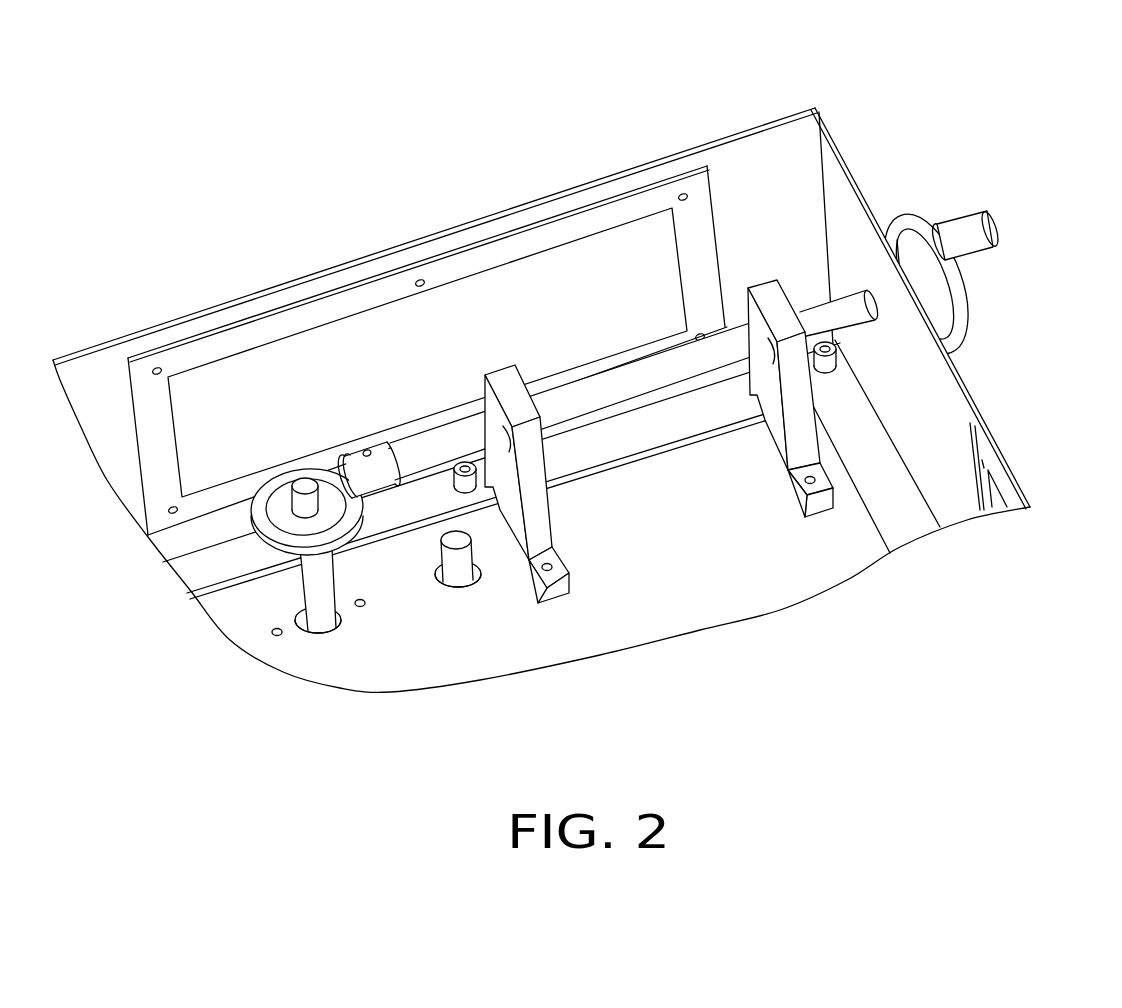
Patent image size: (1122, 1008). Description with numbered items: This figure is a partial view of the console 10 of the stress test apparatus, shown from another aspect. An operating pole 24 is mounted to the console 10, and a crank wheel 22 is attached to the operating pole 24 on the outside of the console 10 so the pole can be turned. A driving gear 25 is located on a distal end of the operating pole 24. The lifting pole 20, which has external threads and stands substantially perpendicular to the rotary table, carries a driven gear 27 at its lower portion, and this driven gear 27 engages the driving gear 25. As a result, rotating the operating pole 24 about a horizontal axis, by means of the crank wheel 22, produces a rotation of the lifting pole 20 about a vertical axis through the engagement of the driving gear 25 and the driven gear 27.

The console 10 is at (763, 207).
The lifting pole 20 is at (312, 585).
The crank wheel 22 is at (970, 222).
The operating pole 24 is at (613, 395).
The driving gear 25 is at (340, 455).
The driven gear 27 is at (270, 540).